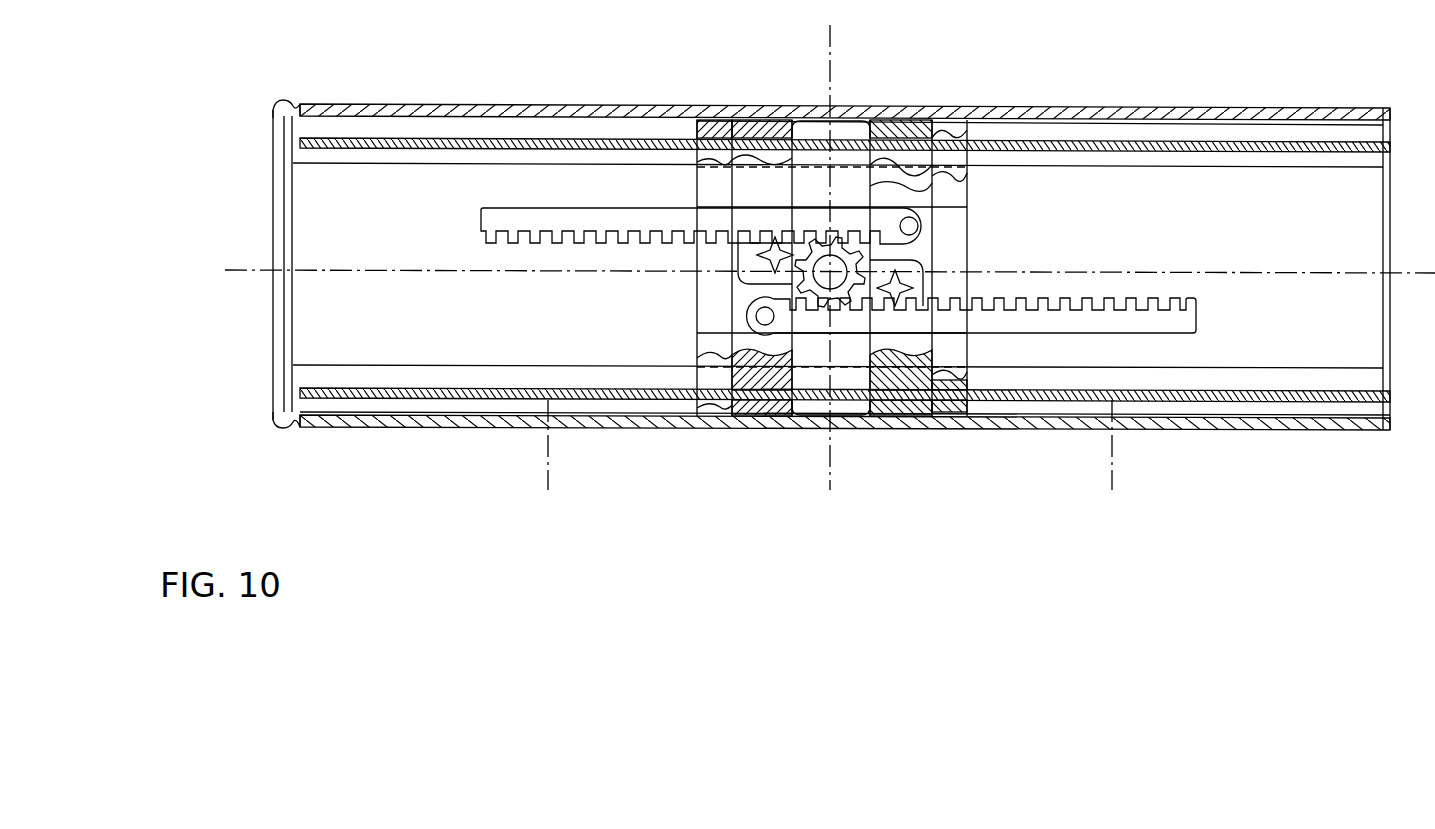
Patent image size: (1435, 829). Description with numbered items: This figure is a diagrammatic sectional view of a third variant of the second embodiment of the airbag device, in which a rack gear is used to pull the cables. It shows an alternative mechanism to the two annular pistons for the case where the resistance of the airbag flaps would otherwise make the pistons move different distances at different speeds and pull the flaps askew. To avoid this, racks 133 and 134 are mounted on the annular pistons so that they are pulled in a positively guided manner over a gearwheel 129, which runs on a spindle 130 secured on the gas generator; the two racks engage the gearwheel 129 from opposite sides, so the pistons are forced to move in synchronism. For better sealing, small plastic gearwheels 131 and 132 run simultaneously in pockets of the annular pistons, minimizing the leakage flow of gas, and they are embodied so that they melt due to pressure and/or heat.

The gearwheel 129 is at (860, 262).
The spindle 130 is at (823, 277).
The small plastic gearwheel 131 is at (895, 288).
The small plastic gearwheel 132 is at (775, 255).
The rack 133 is at (1195, 330).
The rack 134 is at (485, 216).